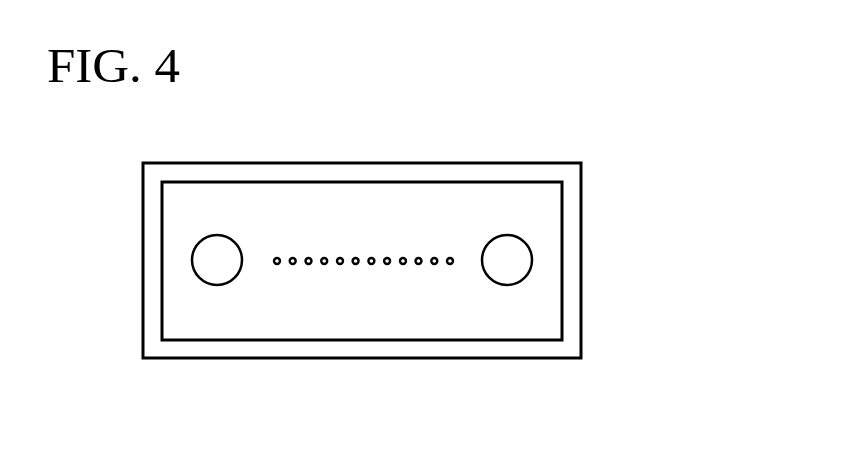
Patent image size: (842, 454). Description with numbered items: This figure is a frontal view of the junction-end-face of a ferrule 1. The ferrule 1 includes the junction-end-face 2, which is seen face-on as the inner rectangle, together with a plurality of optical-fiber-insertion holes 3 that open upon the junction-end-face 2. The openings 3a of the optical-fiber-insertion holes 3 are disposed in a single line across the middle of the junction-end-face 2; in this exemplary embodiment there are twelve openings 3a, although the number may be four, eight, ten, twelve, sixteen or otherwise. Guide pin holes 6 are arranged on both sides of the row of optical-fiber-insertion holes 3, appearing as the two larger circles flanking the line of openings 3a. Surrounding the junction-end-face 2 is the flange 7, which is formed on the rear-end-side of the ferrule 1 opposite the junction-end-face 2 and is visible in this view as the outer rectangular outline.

The ferrule 1 is at (426, 255).
The junction-end-face 2 is at (463, 198).
The optical-fiber-insertion holes 3 is at (382, 337).
The openings 3a is at (340, 265).
The guide pin holes 6 is at (213, 283).
The flange 7 is at (572, 257).